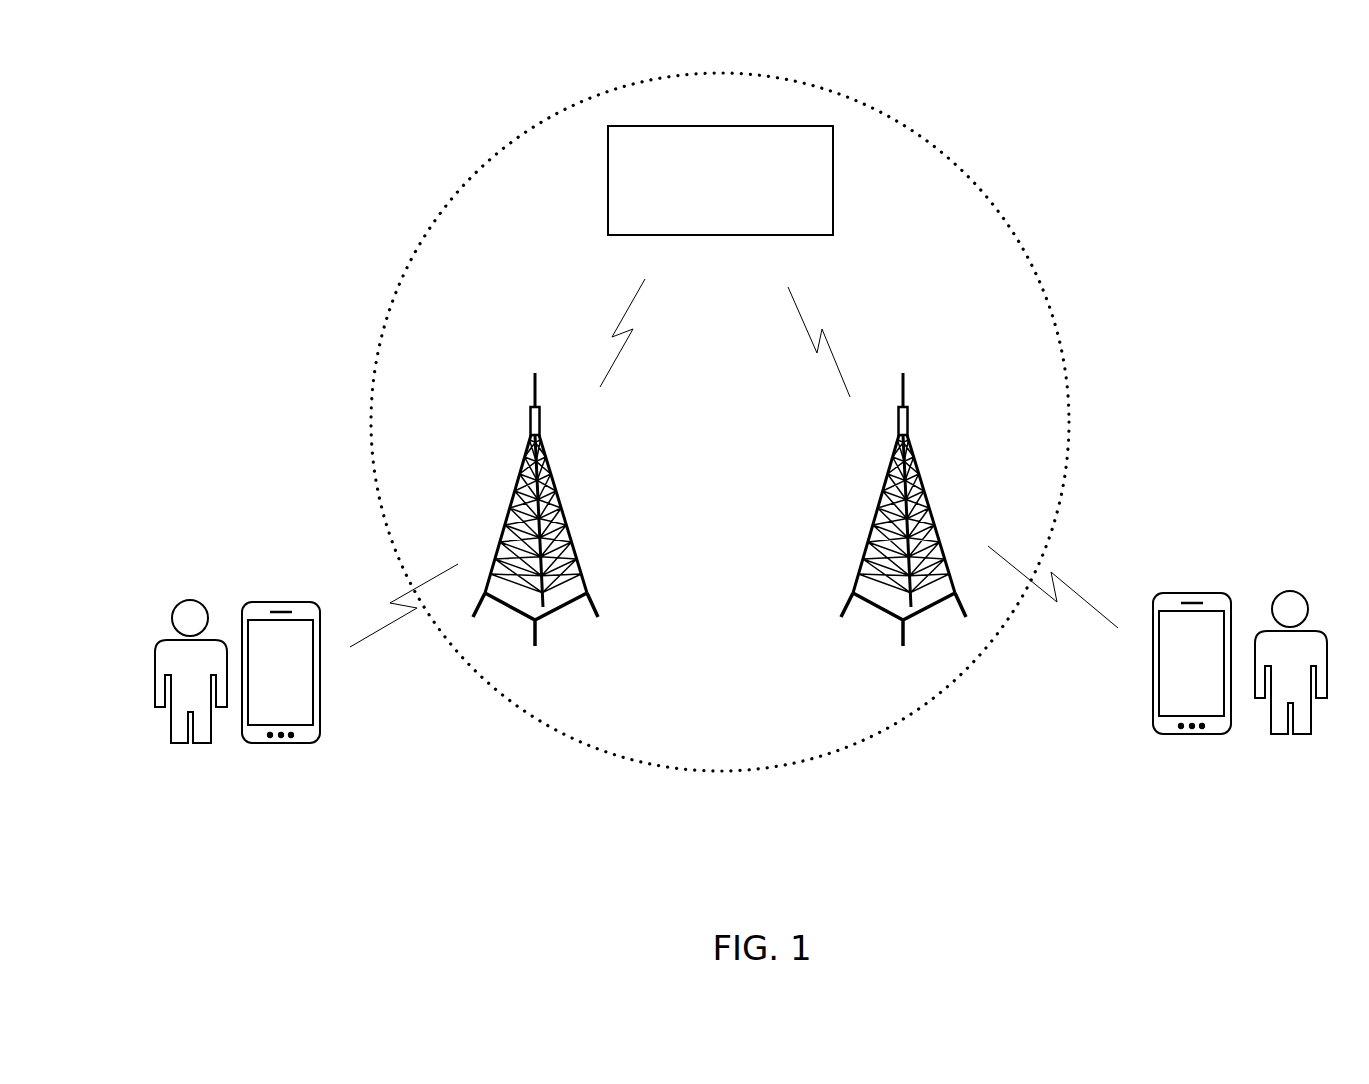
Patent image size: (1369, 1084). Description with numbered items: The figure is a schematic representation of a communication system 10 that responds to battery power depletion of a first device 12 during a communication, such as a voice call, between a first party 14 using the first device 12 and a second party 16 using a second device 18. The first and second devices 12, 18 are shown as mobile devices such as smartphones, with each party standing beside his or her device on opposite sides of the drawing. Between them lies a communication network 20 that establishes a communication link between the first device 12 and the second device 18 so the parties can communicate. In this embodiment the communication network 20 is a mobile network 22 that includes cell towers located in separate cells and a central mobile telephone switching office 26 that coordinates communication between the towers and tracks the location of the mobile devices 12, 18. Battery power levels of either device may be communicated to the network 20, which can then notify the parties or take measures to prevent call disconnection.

The communication system 10 is at (263, 82).
The first device 12 is at (289, 601).
The first party 14 is at (155, 655).
The second party 16 is at (1309, 662).
The second device 18 is at (1194, 640).
The communication network 20 is at (333, 188).
The mobile network 22 is at (369, 278).
The mobile telephone switching office 26 is at (833, 180).